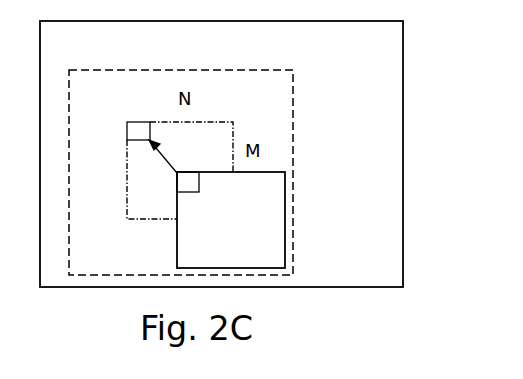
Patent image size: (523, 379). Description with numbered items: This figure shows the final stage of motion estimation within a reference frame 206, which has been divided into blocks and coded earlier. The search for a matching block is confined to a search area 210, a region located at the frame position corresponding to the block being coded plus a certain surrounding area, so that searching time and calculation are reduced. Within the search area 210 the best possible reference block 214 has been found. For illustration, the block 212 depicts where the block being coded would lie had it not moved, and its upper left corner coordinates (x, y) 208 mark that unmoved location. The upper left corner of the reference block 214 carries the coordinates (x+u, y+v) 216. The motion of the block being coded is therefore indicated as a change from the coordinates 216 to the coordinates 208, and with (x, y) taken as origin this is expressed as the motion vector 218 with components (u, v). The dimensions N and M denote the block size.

The reference frame 206 is at (403, 157).
The coordinates (x, y) 208 is at (129, 132).
The search area 210 is at (293, 112).
The block 212 is at (144, 200).
The reference block 214 is at (285, 213).
The coordinates (x+u, y+v) 216 is at (197, 185).
The motion vector 218 is at (166, 161).